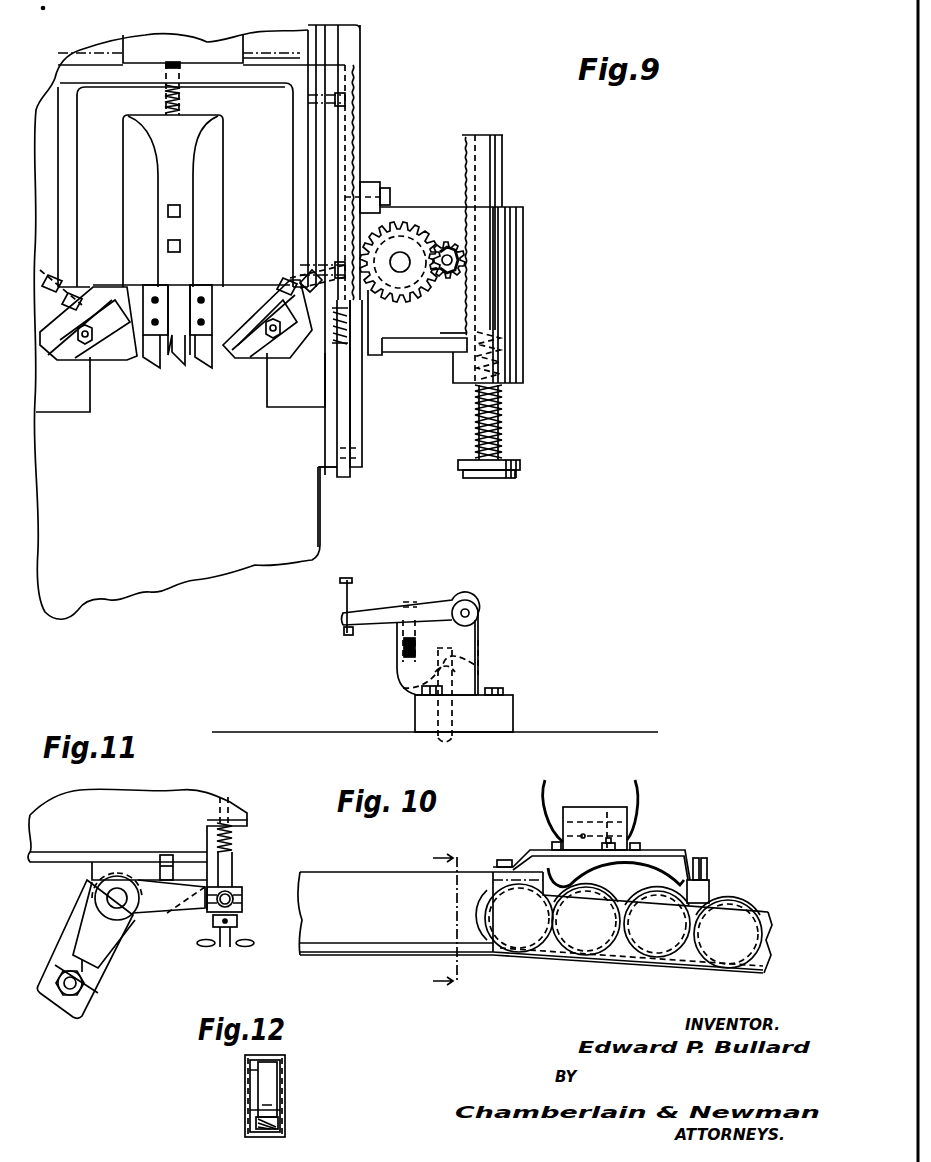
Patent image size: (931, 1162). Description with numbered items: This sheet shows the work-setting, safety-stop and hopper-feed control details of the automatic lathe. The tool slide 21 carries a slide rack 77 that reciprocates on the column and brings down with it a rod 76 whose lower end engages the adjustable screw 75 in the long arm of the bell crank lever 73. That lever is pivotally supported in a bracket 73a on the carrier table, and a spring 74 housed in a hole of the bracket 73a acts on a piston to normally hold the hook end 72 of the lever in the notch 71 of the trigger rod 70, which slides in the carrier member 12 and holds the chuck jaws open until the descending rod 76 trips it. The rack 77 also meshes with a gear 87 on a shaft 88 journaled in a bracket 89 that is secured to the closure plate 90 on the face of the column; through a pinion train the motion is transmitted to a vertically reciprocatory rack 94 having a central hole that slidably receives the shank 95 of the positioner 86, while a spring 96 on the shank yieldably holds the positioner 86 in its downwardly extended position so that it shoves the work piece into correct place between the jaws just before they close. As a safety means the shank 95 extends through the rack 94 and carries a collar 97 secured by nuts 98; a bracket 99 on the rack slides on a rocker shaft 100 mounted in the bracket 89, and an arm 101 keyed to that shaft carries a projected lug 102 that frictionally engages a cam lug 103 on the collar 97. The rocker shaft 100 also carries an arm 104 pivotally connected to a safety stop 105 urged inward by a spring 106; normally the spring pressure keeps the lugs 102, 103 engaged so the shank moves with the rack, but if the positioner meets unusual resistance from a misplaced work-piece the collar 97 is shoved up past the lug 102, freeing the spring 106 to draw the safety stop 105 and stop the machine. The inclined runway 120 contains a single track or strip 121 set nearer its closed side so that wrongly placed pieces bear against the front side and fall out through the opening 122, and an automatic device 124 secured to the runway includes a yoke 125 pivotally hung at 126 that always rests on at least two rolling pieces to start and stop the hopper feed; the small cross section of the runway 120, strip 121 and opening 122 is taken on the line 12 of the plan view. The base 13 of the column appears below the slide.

In FIG. 9, the tool slide 21 is at (193, 201).
In FIG. 9, the slide rack 77 is at (352, 118).
In FIG. 9, the vertically reciprocatory rack 94 is at (470, 259).
In FIG. 9, the gear 87 is at (409, 224).
In FIG. 9, the shaft 88 is at (402, 266).
In FIG. 9, the bracket 89 is at (432, 347).
In FIG. 9, the closure plate 90 is at (363, 406).
In FIG. 9, the spring 96 is at (503, 413).
In FIG. 9, the shank 95 is at (503, 430).
In FIG. 9, the positioner 86 is at (522, 464).
In FIG. 9, the rod 76 is at (340, 428).
In FIG. 9, the base 13 is at (315, 507).
In FIG. 9, the trigger rod 70 is at (458, 740).
In FIG. 9, the notch 71 is at (410, 693).
In FIG. 9, the hook end 72 is at (480, 675).
In FIG. 9, the bell crank lever 73 is at (452, 605).
In FIG. 9, the bracket 73a is at (405, 665).
In FIG. 9, the spring 74 is at (404, 650).
In FIG. 9, the adjustable screw 75 is at (351, 593).
In FIG. 11, the spring 106 is at (235, 836).
In FIG. 11, the safety stop 105 is at (238, 924).
In FIG. 11, the arm 101 is at (108, 937).
In FIG. 11, the arm 104 is at (187, 907).
In FIG. 11, the rocker shaft 100 is at (113, 895).
In FIG. 11, the bracket 99 is at (80, 916).
In FIG. 11, the projected lug 102 is at (90, 967).
In FIG. 11, the cam lug 103 is at (80, 966).
In FIG. 11, the collar 97 is at (87, 990).
In FIG. 11, the nuts 98 is at (73, 997).
In FIG. 10, the opening 122 is at (368, 885).
In FIG. 12, the opening 122 is at (283, 1087).
In FIG. 10, the track or strip 121 is at (395, 945).
In FIG. 12, the track or strip 121 is at (277, 1127).
In FIG. 10, the inclined runway 120 is at (358, 956).
In FIG. 12, the inclined runway 120 is at (247, 1100).
In FIG. 10, the yoke 125 is at (640, 870).
In FIG. 10, the pivot 126 is at (607, 858).
In FIG. 10, the automatic device 124 is at (595, 810).
In FIG. 10, the carrier member 12 is at (449, 923).